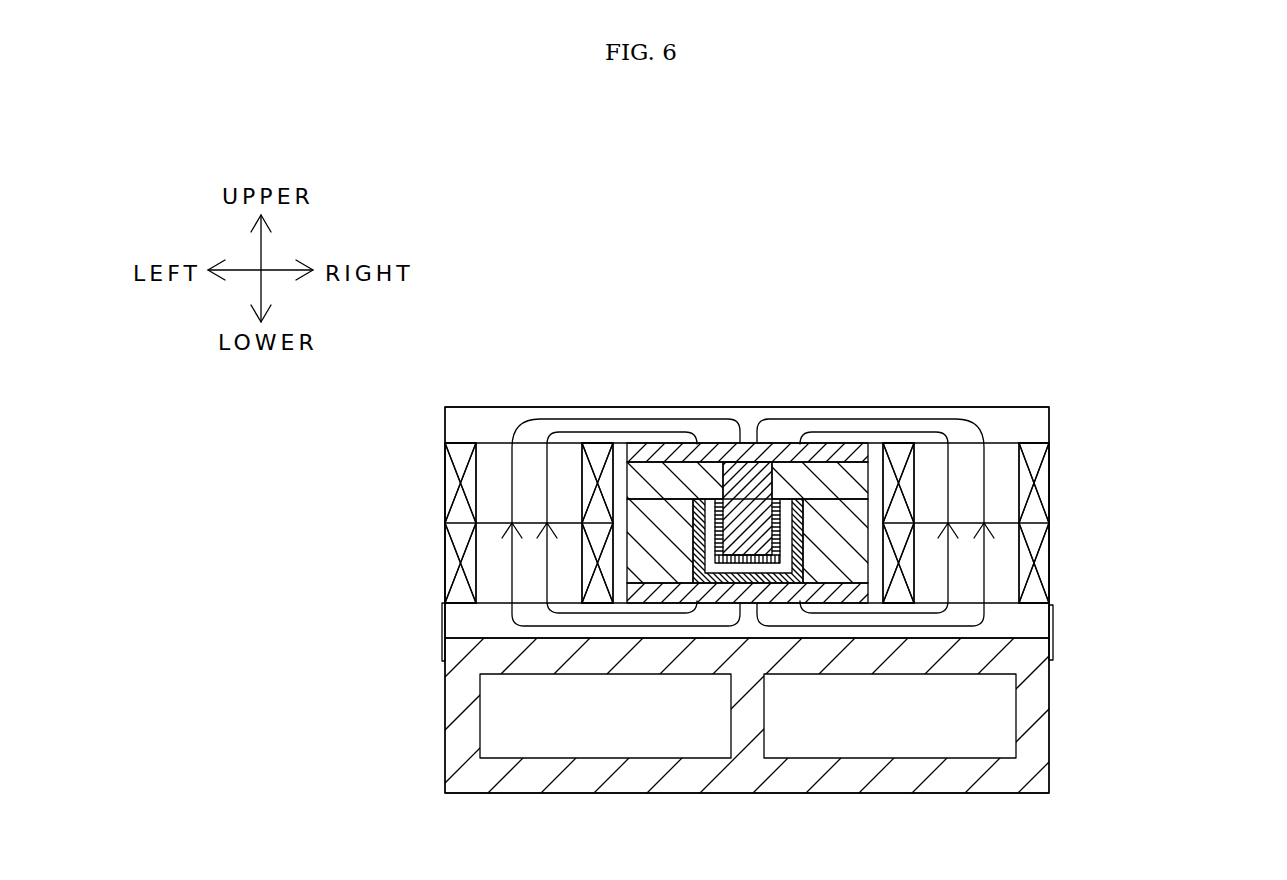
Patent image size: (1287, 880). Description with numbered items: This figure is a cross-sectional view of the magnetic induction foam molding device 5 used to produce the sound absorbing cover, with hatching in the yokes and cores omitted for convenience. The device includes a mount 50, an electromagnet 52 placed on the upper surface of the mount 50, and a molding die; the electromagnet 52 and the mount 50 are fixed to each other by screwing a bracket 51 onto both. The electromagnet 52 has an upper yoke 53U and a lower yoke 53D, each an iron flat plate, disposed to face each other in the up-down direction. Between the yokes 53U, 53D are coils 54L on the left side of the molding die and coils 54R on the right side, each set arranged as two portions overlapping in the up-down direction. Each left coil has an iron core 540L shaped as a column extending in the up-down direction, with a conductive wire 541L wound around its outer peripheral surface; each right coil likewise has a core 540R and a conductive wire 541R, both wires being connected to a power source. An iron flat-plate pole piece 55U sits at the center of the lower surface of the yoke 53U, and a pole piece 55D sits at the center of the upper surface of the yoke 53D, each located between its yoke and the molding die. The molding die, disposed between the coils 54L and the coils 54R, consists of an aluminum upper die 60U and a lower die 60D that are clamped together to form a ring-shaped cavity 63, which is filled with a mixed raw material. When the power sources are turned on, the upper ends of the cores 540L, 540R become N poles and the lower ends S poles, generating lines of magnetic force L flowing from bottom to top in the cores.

The magnetic induction foam molding device 5 is at (1070, 325).
The mount 50 is at (908, 780).
The bracket 51 is at (1053, 647).
The electromagnet 52 is at (517, 390).
The yoke 53U is at (1033, 422).
The yoke 53D is at (1035, 622).
The coils 54L is at (445, 510).
The coils 54R is at (1050, 510).
The core 540L is at (493, 475).
The core 540R is at (1003, 473).
The conductive wire 541L is at (445, 463).
The conductive wire 541R is at (1048, 463).
The pole piece 55U is at (681, 447).
The pole piece 55D is at (700, 585).
The upper die 60U is at (800, 470).
The lower die 60D is at (847, 570).
The cavity 63 is at (740, 470).
The lines of magnetic force L is at (953, 408).